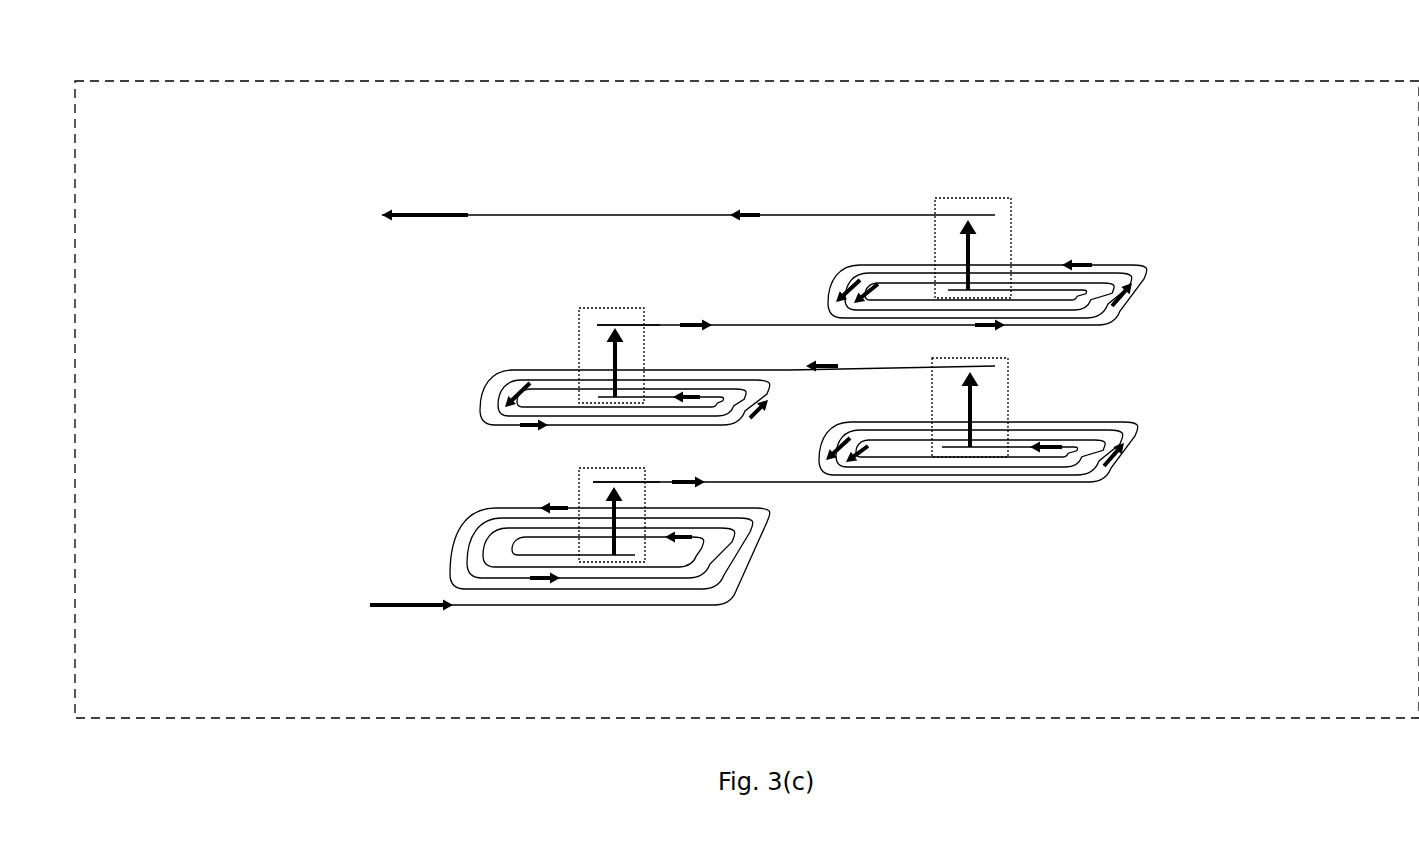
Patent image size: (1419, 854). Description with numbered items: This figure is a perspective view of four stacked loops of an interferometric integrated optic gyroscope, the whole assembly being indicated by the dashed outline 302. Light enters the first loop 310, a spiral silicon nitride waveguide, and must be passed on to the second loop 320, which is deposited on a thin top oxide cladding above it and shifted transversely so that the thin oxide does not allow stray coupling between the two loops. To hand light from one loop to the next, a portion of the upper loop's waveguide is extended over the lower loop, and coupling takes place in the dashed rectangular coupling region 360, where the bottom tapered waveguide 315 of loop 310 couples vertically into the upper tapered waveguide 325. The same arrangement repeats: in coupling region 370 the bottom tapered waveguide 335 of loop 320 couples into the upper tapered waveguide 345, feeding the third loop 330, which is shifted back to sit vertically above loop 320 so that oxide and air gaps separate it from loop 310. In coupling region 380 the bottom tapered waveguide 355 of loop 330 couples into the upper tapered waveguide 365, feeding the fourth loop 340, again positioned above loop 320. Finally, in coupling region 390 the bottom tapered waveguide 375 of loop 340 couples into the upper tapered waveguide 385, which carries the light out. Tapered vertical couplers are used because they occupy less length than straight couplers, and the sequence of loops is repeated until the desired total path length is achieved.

The optical delay device 302 is at (1222, 68).
The loop 310 is at (452, 538).
The bottom tapered waveguide 315 is at (593, 553).
The loop 320 is at (1150, 458).
The upper tapered waveguide 325 is at (620, 479).
The loop 330 is at (490, 377).
The bottom tapered waveguide 335 is at (963, 452).
The loop 340 is at (1162, 278).
The upper tapered waveguide 345 is at (983, 372).
The bottom tapered waveguide 355 is at (606, 401).
The coupling region 360 is at (652, 550).
The upper tapered waveguide 365 is at (626, 318).
The coupling region 370 is at (1015, 362).
The bottom tapered waveguide 375 is at (985, 290).
The coupling region 380 is at (575, 330).
The upper tapered waveguide 385 is at (952, 213).
The coupling region 390 is at (1015, 205).